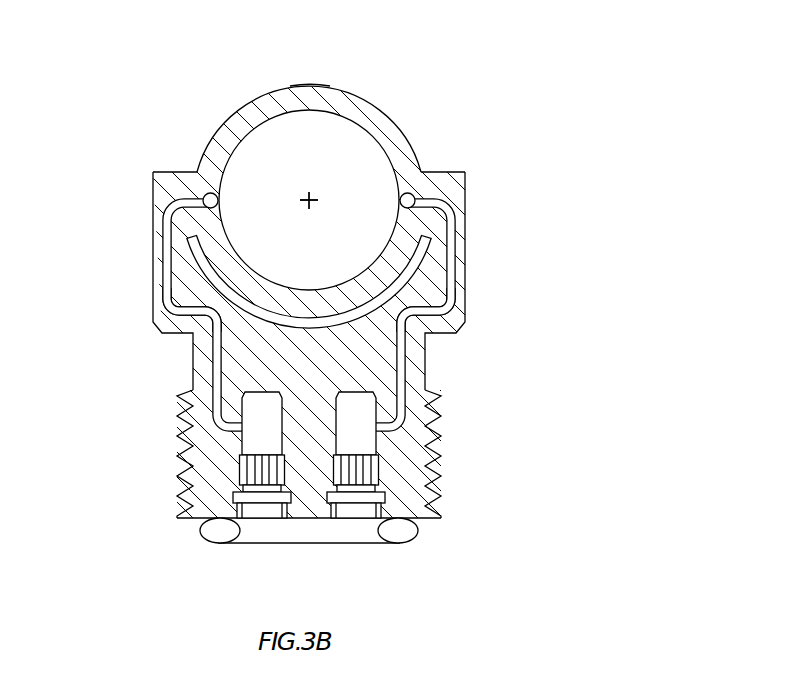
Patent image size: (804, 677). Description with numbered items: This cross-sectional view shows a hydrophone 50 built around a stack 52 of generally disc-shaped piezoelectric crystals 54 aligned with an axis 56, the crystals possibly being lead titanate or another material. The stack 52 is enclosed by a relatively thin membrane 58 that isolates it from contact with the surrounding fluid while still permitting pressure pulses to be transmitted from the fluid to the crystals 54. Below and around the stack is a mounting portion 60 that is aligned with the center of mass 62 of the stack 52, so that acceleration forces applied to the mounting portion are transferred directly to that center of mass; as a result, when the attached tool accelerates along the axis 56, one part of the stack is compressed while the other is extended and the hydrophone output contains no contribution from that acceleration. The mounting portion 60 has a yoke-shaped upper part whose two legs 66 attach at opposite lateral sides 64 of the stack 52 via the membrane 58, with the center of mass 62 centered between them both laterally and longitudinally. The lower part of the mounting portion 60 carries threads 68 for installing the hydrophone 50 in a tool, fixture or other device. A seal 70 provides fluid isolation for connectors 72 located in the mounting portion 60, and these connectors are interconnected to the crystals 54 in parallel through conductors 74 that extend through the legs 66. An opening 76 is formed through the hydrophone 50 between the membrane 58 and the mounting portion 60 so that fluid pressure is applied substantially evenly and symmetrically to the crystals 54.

The hydrophone 50 is at (402, 338).
The stack 52 is at (372, 120).
The piezoelectric crystals 54 is at (250, 100).
The axis 56 is at (314, 197).
The membrane 58 is at (320, 85).
The mounting portion 60 is at (474, 274).
The center of mass 62 is at (338, 206).
The lateral sides 64 is at (203, 183).
The legs 66 is at (163, 292).
The threads 68 is at (440, 425).
The seal 70 is at (420, 528).
The connectors 72 is at (240, 468).
The conductors 74 is at (207, 352).
The opening 76 is at (212, 277).